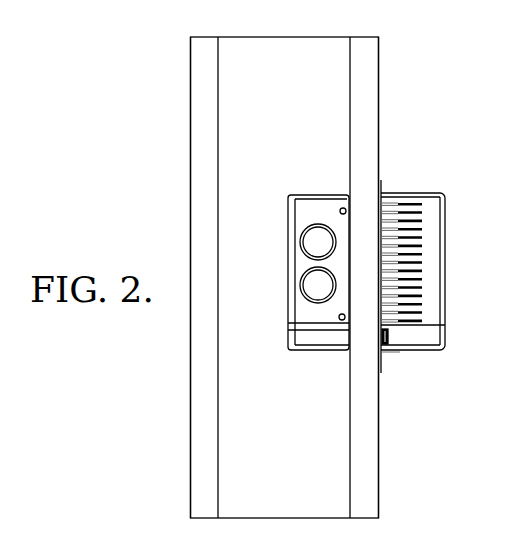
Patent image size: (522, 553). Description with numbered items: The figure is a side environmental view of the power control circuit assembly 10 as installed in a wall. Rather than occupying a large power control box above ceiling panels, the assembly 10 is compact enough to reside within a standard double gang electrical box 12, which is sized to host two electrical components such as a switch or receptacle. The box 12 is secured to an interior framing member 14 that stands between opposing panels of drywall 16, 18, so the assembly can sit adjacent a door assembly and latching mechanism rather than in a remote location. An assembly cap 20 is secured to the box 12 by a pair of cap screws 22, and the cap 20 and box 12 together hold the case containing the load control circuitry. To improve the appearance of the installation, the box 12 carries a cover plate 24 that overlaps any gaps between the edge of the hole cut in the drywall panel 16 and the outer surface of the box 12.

The power control circuit assembly 10 is at (449, 152).
The double gang electrical box 12 is at (315, 352).
The interior framing member 14 is at (284, 60).
The drywall panel 16 is at (367, 51).
The drywall panel 18 is at (194, 73).
The assembly cap 20 is at (433, 229).
The cap screws 22 is at (388, 336).
The cover plate 24 is at (382, 363).